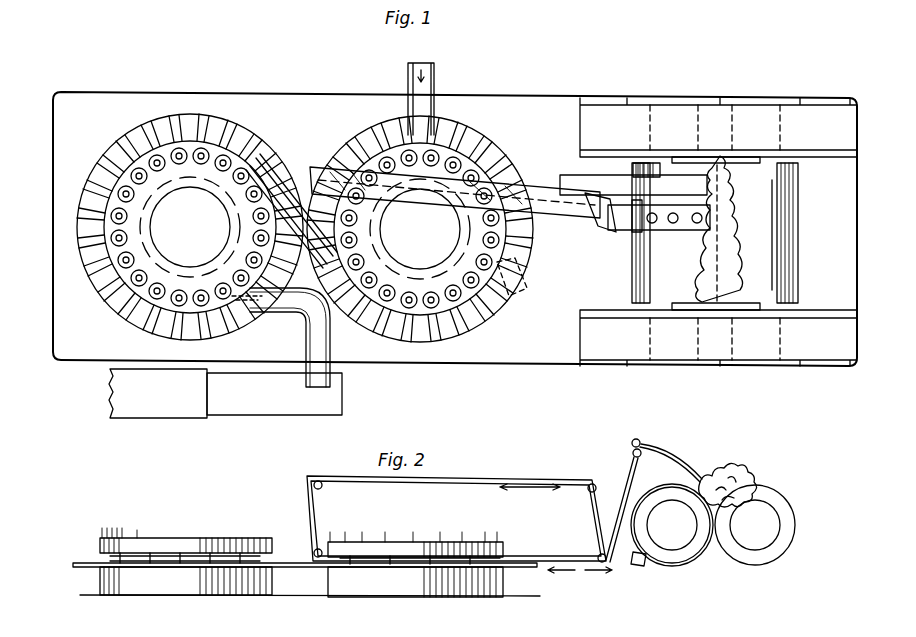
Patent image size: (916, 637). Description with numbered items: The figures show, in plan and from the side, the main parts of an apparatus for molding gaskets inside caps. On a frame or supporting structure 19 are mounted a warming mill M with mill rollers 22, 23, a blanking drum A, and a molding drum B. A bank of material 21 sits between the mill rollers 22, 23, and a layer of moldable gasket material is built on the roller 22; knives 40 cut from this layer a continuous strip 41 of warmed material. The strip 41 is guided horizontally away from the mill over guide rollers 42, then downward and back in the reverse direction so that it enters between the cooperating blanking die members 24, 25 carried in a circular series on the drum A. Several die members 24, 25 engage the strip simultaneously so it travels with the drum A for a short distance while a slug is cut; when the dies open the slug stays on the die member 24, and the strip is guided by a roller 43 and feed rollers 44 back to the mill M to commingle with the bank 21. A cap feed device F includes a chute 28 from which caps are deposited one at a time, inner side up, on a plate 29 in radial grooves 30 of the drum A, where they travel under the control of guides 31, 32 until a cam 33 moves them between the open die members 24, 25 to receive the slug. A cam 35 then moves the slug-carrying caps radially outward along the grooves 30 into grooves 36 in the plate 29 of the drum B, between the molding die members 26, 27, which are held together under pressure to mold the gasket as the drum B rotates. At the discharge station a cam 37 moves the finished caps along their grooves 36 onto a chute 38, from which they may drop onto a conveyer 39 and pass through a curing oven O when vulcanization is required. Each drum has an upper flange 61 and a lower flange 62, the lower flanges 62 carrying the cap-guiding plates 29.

In FIG. 1, the frame 19 is at (526, 106).
In FIG. 1, the bank of material 21 is at (732, 222).
In FIG. 2, the bank of material 21 is at (800, 462).
In FIG. 1, the mill roller 22 is at (634, 270).
In FIG. 2, the mill roller 22 is at (677, 557).
In FIG. 1, the mill roller 23 is at (800, 262).
In FIG. 2, the mill roller 23 is at (757, 566).
In FIG. 1, the blanking die member 24 is at (440, 304).
In FIG. 2, the blanking die member 24 is at (372, 568).
In FIG. 2, the blanking die member 25 is at (392, 566).
In FIG. 2, the molding die member 26 is at (120, 555).
In FIG. 2, the molding die member 27 is at (128, 568).
In FIG. 1, the chute 28 is at (421, 94).
In FIG. 1, the plate 29 is at (118, 322).
In FIG. 2, the plate 29 is at (90, 566).
In FIG. 1, the radial grooves 30 is at (420, 332).
In FIG. 1, the guide 31 is at (468, 130).
In FIG. 1, the guide 32 is at (492, 152).
In FIG. 1, the cam 33 is at (528, 276).
In FIG. 1, the cam 35 is at (270, 192).
In FIG. 1, the grooves 36 is at (250, 148).
In FIG. 1, the cam 37 is at (262, 304).
In FIG. 1, the chute 38 is at (320, 350).
In FIG. 1, the conveyer 39 is at (262, 400).
In FIG. 2, the knives 40 is at (637, 566).
In FIG. 1, the strip 41 is at (562, 178).
In FIG. 2, the strip 41 is at (459, 514).
In FIG. 2, the guide rollers 42 is at (323, 488).
In FIG. 2, the roller 43 is at (598, 557).
In FIG. 2, the feed rollers 44 is at (632, 443).
In FIG. 2, the upper flange 61 is at (100, 545).
In FIG. 2, the lower flange 62 is at (100, 582).
In FIG. 1, the blanking drum A is at (315, 232).
In FIG. 1, the molding drum B is at (288, 221).
In FIG. 1, the cap feed device F is at (442, 70).
In FIG. 1, the warming mill M is at (735, 232).
In FIG. 2, the warming mill M is at (792, 480).
In FIG. 1, the curing oven O is at (178, 405).